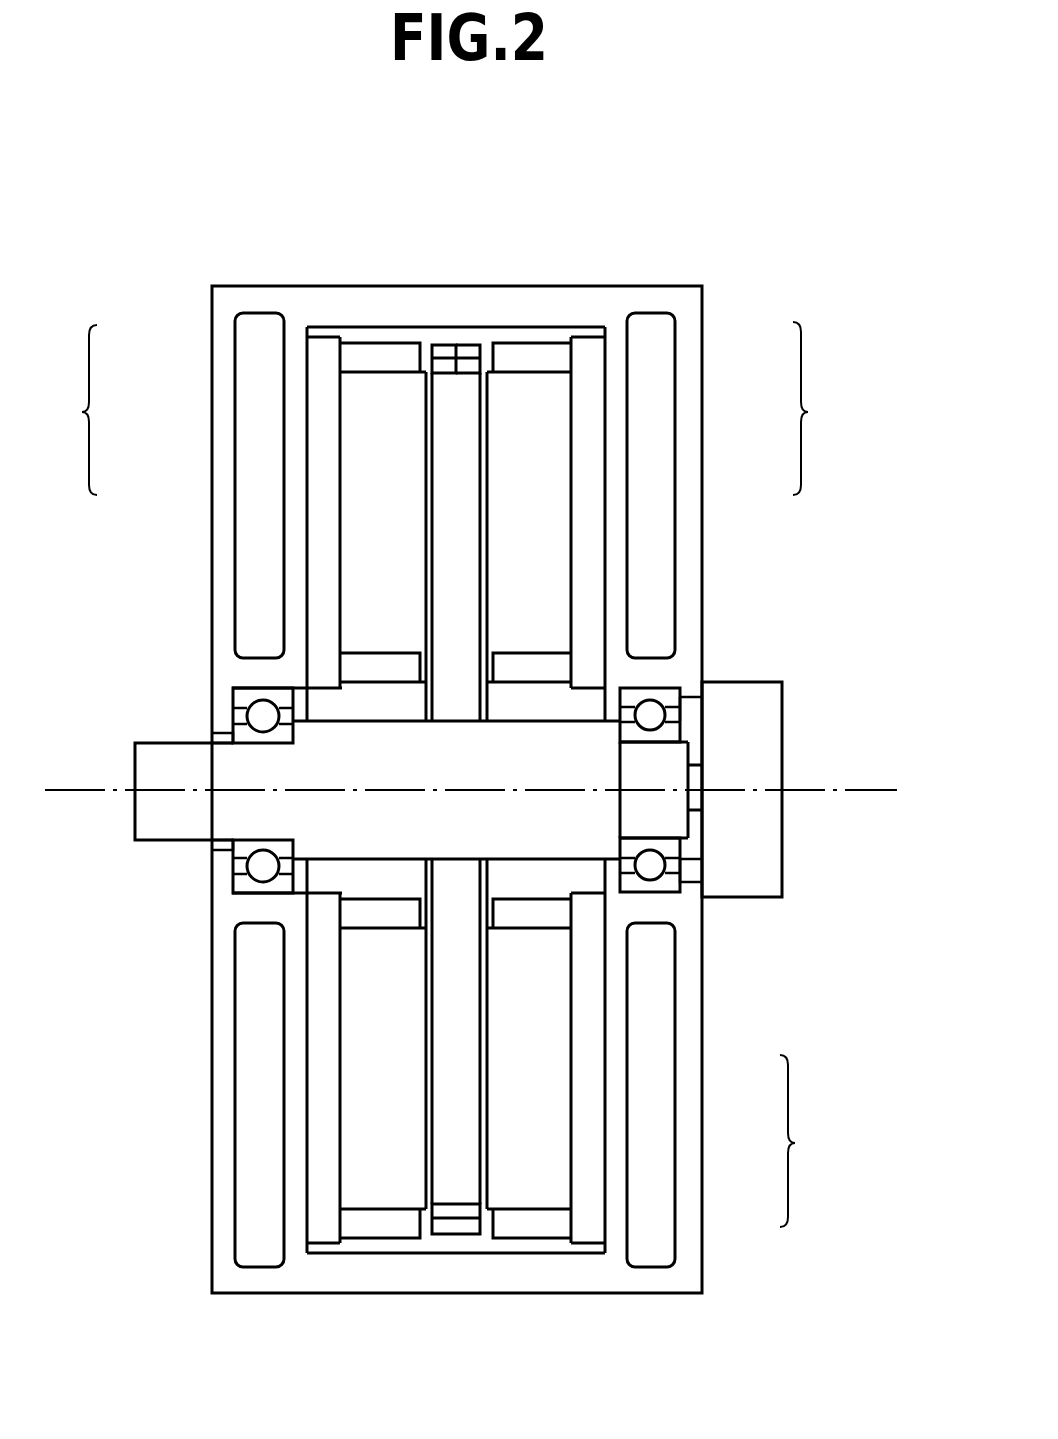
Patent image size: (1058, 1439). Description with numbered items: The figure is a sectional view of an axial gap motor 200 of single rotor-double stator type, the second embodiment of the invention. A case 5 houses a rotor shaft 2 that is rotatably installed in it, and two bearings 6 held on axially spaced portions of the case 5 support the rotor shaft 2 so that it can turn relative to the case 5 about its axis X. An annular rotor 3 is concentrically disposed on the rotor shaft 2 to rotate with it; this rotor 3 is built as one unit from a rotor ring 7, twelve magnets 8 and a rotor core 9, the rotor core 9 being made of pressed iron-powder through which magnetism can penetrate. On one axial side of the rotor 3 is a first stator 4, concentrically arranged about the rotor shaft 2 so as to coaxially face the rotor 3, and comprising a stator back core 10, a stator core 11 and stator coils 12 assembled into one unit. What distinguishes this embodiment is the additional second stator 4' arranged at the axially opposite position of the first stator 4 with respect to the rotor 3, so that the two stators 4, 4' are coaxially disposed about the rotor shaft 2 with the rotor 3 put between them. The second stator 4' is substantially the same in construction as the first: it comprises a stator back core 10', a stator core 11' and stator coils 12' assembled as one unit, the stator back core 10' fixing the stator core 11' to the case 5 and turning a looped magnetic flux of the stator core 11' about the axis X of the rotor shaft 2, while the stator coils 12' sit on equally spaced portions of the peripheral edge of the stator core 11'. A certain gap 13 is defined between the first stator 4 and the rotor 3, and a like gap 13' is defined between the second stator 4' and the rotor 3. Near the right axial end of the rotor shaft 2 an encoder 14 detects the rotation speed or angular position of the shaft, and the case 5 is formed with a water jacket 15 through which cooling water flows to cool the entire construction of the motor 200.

The axial gap motor 200 is at (670, 182).
The rotor shaft 2 is at (538, 837).
The annular rotor 3 is at (530, 1051).
The stator 4 is at (816, 408).
The additional stator 4' is at (71, 410).
The case 5 is at (487, 1272).
The bearings 6 is at (238, 698).
The rotor ring 7 is at (463, 1225).
The magnets 8 is at (457, 1047).
The rotor core 9 is at (450, 897).
The stator back core 10 is at (676, 573).
The stator back core 10' is at (226, 571).
The stator core 11 is at (634, 529).
The stator core 11' is at (268, 529).
The stator coils 12 is at (637, 507).
The stator coils 12' is at (265, 508).
The gap 13 is at (490, 285).
The gap 13' is at (417, 285).
The encoder 14 is at (750, 752).
The water jacket 15 is at (252, 1018).
The axis X is at (835, 792).